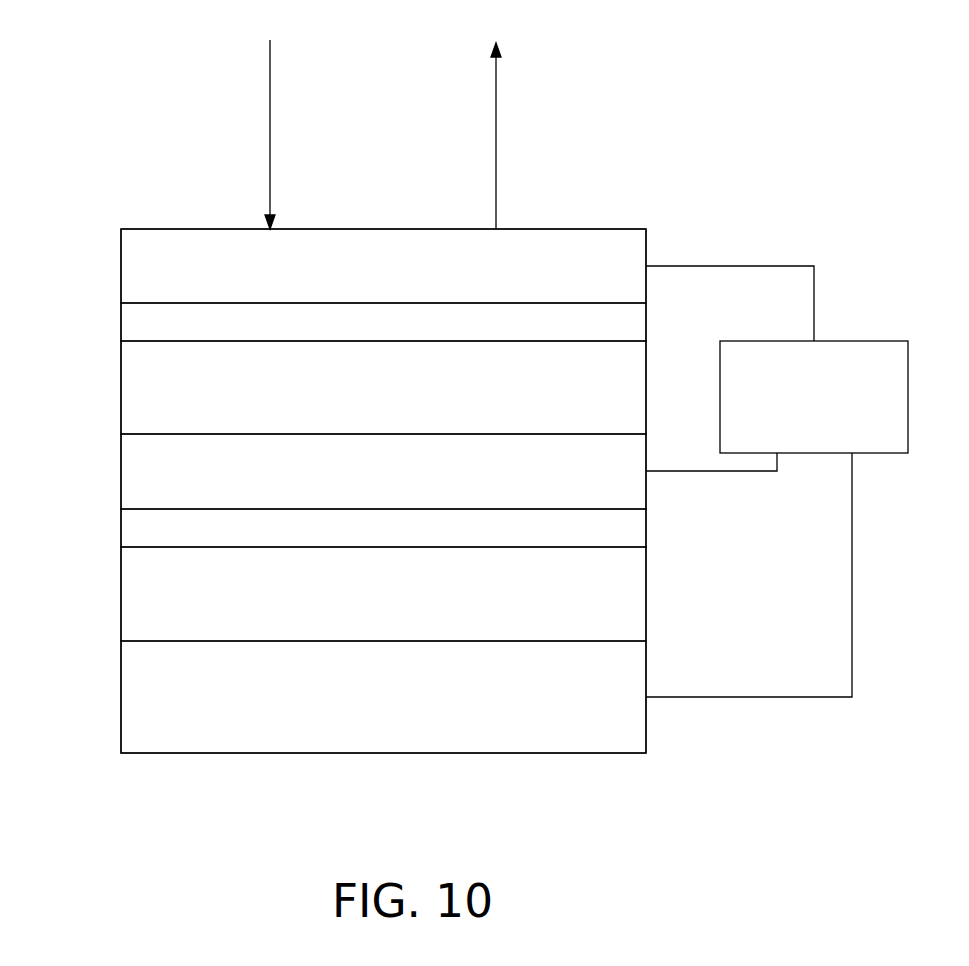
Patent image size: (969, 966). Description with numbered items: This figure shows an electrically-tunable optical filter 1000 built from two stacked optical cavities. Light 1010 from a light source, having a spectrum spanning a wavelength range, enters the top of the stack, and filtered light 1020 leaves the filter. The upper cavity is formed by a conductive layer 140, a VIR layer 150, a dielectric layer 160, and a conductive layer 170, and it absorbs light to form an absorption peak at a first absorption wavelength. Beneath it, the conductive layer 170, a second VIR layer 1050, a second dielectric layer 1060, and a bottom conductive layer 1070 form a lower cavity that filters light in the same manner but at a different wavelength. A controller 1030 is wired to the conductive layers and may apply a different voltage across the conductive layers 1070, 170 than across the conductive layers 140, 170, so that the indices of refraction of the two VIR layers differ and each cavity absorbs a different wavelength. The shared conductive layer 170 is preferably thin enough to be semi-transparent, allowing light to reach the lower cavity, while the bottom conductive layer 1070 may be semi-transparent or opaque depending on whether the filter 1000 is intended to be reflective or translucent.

The tunable filter 1000 is at (117, 90).
The light 1010 is at (270, 79).
The light 1020 is at (496, 79).
The controller 1030 is at (827, 341).
The conductive layer 140 is at (121, 239).
The VIR layer 150 is at (121, 323).
The dielectric layer 160 is at (121, 398).
The conductive layer 170 is at (121, 459).
The VIR layer 1050 is at (121, 528).
The dielectric layer 1060 is at (121, 604).
The conductive layer 1070 is at (121, 698).